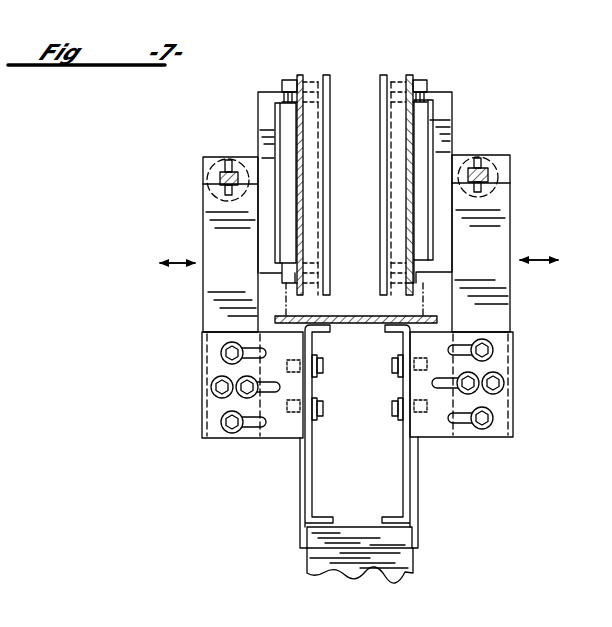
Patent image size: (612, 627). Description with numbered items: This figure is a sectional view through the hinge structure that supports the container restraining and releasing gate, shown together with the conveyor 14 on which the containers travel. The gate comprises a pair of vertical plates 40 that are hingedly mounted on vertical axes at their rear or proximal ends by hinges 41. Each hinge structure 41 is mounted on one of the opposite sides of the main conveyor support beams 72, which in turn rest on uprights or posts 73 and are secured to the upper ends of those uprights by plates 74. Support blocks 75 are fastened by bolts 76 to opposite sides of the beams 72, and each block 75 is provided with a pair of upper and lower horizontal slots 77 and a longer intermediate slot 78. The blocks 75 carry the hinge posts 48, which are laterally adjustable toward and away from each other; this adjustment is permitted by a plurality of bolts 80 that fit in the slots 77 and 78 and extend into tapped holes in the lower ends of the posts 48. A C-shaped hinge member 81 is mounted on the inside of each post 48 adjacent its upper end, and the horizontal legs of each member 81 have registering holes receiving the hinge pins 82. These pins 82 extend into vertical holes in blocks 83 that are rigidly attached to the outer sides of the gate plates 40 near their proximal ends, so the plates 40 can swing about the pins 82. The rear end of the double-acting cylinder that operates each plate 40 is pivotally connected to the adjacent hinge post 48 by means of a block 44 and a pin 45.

The conveyor 14 is at (412, 308).
The vertical plates 40 is at (300, 75).
The hinges 41 is at (213, 110).
The block 44 is at (203, 184).
The pin 45 is at (215, 166).
The hinge post 48 is at (203, 212).
The main conveyor support beams 72 is at (305, 473).
The uprights or posts 73 is at (417, 557).
The plates 74 is at (300, 532).
The support blocks 75 is at (203, 440).
The bolts 76 is at (392, 403).
The upper and lower horizontal slots 77 is at (450, 352).
The intermediate slot 78 is at (266, 382).
The bolts 80 is at (211, 387).
The C-shaped hinge member 81 is at (258, 132).
The hinge pins 82 is at (283, 85).
The blocks 83 is at (287, 215).